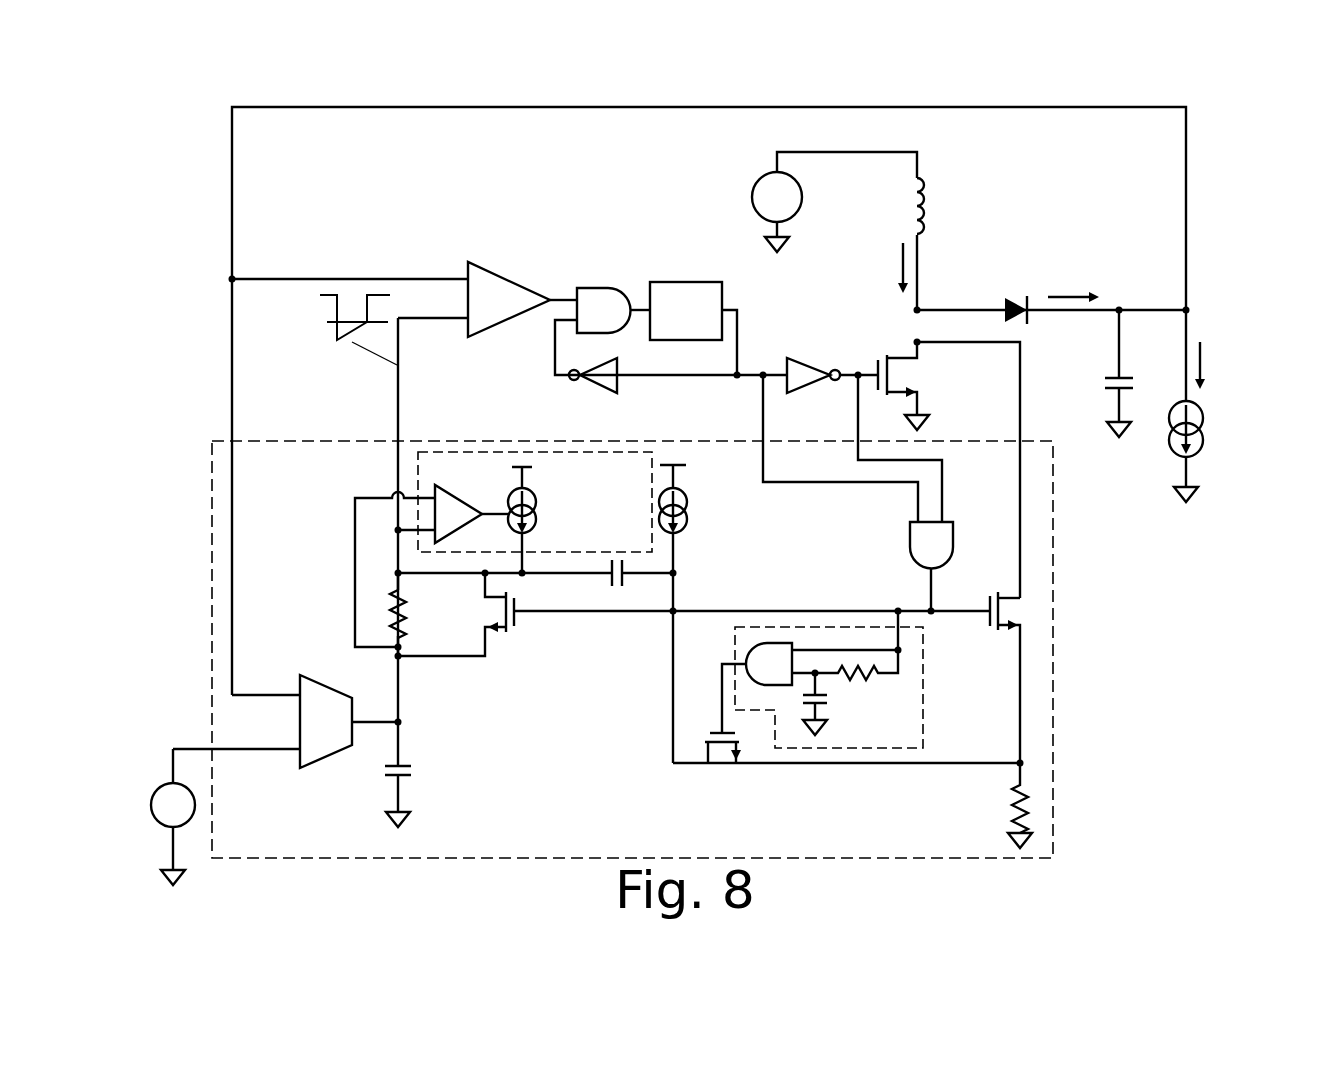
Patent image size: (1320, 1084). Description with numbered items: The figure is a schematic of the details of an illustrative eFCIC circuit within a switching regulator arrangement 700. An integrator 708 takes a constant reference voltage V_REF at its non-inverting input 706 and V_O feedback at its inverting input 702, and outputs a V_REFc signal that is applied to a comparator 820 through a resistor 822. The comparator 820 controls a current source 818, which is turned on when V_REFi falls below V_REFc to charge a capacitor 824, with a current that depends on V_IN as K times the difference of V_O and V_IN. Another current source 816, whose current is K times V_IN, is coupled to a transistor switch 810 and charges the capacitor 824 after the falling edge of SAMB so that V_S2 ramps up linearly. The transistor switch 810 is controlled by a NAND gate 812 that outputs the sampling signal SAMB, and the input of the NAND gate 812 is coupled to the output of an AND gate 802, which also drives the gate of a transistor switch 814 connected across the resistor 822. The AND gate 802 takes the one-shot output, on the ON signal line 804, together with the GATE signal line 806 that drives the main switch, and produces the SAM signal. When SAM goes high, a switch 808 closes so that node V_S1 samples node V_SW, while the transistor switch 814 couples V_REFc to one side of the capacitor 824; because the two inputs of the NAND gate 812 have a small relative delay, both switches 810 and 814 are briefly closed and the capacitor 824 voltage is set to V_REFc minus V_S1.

The switching regulator circuit 700 is at (882, 94).
The inverting input 702 is at (232, 580).
The non-inverting input 706 is at (195, 749).
The integrator 708 is at (328, 752).
The AND gate 802 is at (910, 548).
The ON signal line 804 is at (763, 460).
The GATE signal line 806 is at (942, 508).
The switch 808 is at (1038, 594).
The transistor switch 810 is at (720, 763).
The NAND gate 812 is at (792, 640).
The transistor switch 814 is at (520, 625).
The current source 816 is at (688, 500).
The current source 818 is at (537, 490).
The comparator 820 is at (483, 465).
The resistor 822 is at (392, 609).
The capacitor 824 is at (620, 590).